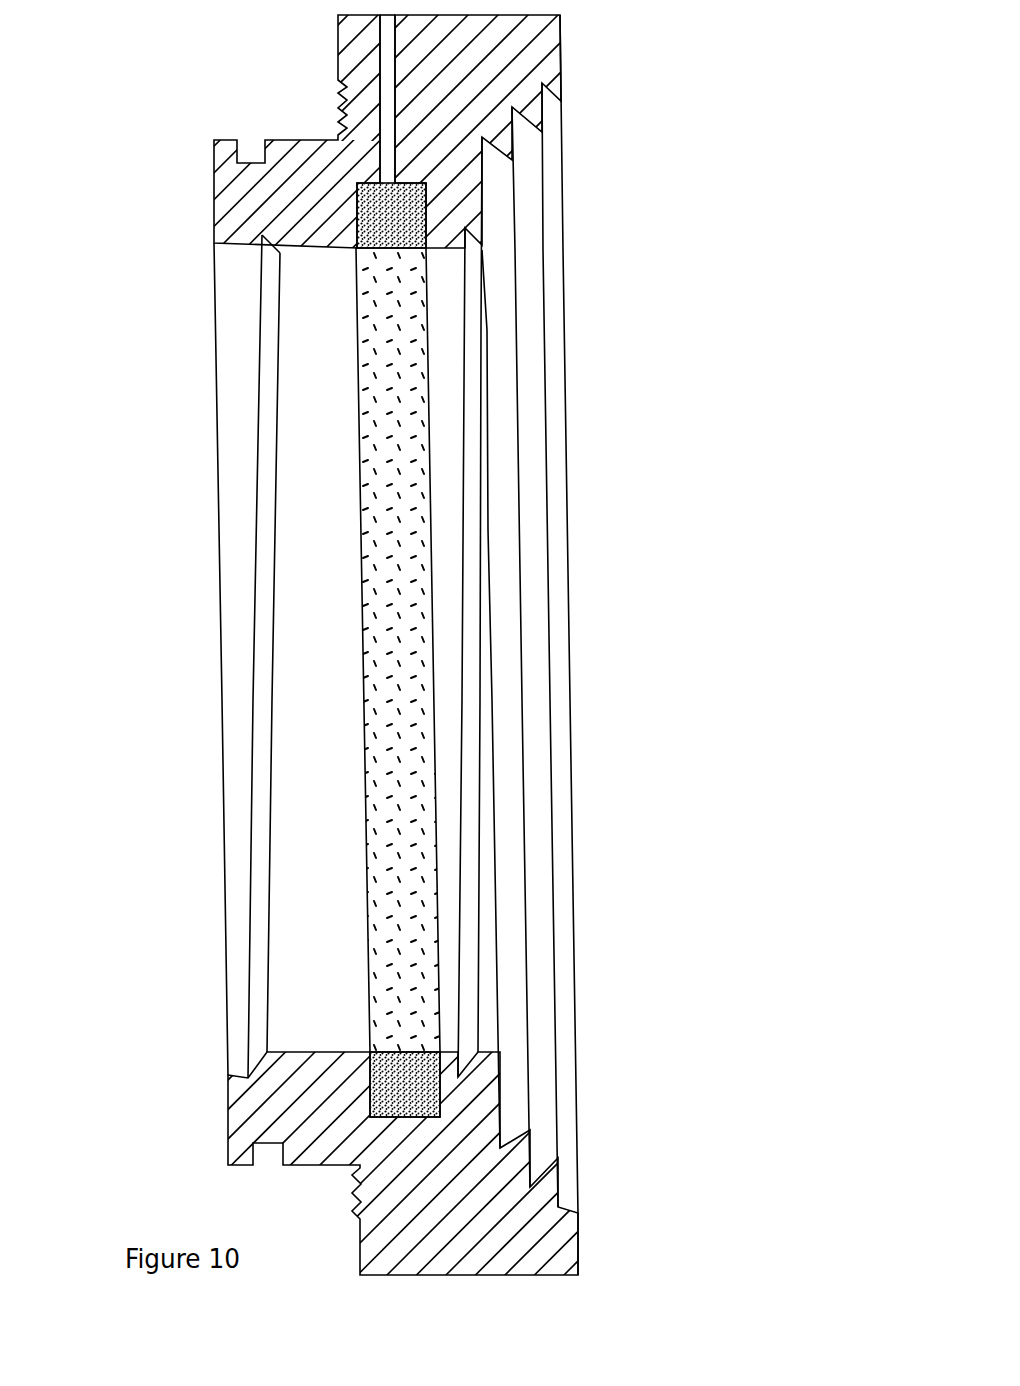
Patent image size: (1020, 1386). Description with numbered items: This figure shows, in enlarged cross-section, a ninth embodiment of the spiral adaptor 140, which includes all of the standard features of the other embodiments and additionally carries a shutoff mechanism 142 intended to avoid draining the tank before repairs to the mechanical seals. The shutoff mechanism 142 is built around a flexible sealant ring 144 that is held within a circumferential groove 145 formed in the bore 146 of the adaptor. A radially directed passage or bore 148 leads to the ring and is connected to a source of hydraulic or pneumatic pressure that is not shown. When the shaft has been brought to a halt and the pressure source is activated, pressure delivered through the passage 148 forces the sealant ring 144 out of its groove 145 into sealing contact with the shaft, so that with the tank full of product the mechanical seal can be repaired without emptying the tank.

The spiral adaptor 140 is at (147, 236).
The shutoff mechanism 142 is at (448, 350).
The flexible sealant ring 144 is at (412, 972).
The circumferential groove 145 is at (440, 1090).
The bore 146 is at (322, 1141).
The radially directed passage or bore 148 is at (383, 112).